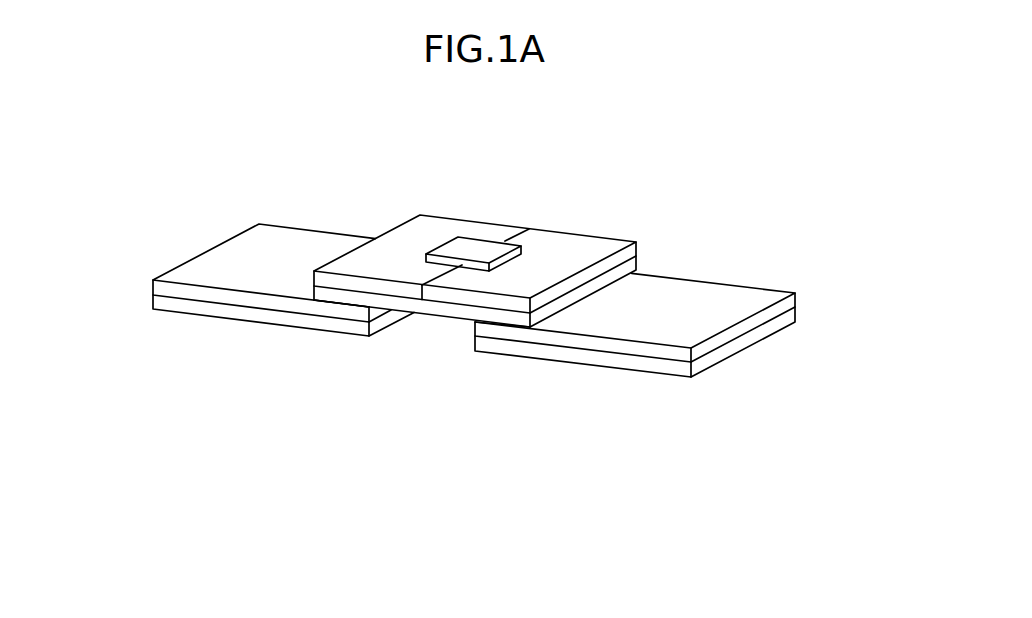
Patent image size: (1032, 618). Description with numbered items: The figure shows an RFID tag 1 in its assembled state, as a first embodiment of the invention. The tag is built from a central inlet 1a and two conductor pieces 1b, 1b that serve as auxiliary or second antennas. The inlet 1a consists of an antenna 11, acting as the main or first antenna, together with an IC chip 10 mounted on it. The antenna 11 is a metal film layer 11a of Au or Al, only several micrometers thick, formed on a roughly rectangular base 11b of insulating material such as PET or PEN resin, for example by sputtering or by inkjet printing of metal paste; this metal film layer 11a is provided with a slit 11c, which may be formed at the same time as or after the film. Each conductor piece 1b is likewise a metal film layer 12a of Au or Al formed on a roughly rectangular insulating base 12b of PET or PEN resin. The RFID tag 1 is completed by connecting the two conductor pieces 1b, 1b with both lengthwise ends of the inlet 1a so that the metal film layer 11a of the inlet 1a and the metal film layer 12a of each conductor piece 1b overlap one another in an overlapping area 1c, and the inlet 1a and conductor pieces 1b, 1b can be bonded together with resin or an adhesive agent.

The RFID tag 1 is at (613, 152).
The inlet 1a is at (413, 330).
The conductor piece 1b is at (295, 333).
The overlapping area 1c is at (368, 341).
The IC chip 10 is at (478, 243).
The antenna 11 is at (428, 228).
The metal film layer 11a is at (635, 245).
The base 11b is at (635, 268).
The slit 11c is at (424, 283).
The metal film layer 12a is at (153, 287).
The base 12b is at (153, 298).